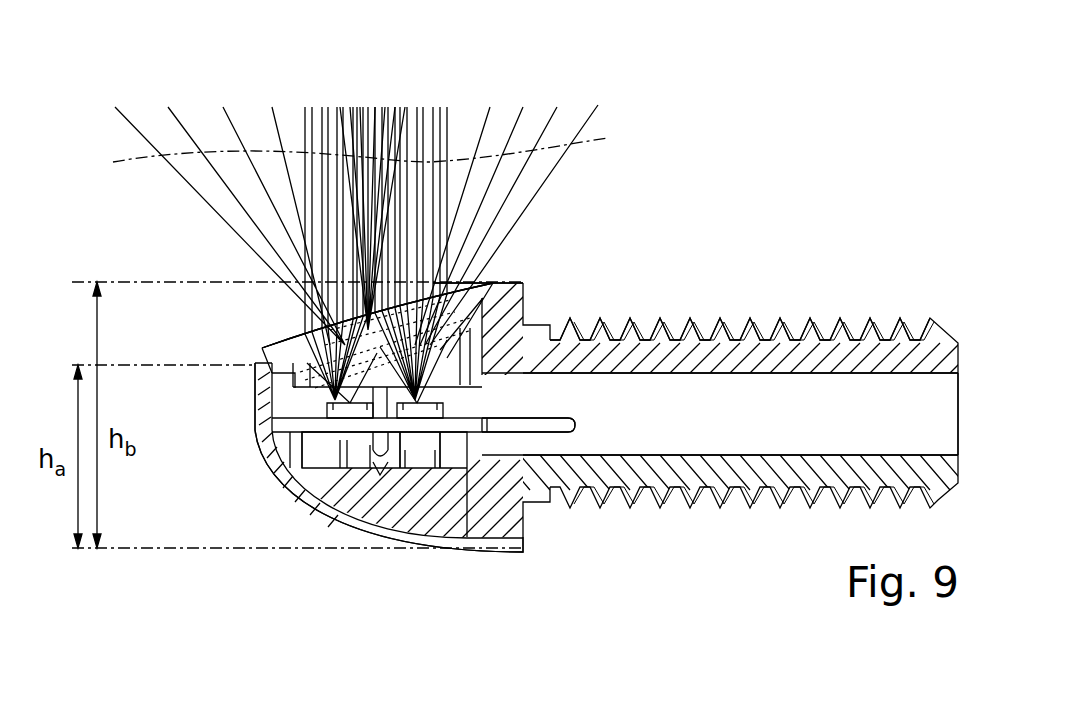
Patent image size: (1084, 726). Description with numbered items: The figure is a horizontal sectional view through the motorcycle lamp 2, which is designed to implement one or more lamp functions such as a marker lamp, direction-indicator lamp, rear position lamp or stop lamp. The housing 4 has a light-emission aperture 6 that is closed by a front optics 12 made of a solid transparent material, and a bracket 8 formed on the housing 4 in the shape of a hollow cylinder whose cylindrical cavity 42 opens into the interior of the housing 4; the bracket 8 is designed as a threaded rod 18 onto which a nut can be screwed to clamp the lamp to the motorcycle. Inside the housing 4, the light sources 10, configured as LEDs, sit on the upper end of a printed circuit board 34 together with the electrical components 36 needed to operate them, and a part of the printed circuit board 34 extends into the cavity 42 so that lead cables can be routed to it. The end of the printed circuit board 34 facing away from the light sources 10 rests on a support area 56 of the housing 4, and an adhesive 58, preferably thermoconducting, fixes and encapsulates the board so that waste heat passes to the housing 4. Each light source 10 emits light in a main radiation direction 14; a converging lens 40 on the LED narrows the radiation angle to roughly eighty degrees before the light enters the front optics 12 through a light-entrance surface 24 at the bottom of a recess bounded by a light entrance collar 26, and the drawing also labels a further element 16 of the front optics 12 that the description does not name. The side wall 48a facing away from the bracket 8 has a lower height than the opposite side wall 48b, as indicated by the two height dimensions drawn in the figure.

The motorcycle lamp 2 is at (762, 158).
The housing 4 is at (420, 455).
The light-emission aperture 6 is at (265, 353).
The bracket 8 is at (818, 272).
The light source 10 is at (300, 480).
The front optics 12 is at (300, 345).
The main radiation direction 14 is at (361, 151).
The lens surface 16 is at (280, 350).
The threaded rod 18 is at (740, 320).
The light-entrance surface 24 is at (338, 345).
The light entrance collar 26 is at (275, 365).
The printed circuit board 34 is at (510, 425).
The electrical component 36 is at (373, 455).
The lens 40 is at (300, 388).
The cylindrical cavity 42 is at (820, 420).
The side wall facing away from the bracket 48a is at (300, 408).
The opposite side wall 48b is at (455, 365).
The support area 56 is at (290, 455).
The adhesive 58 is at (292, 425).